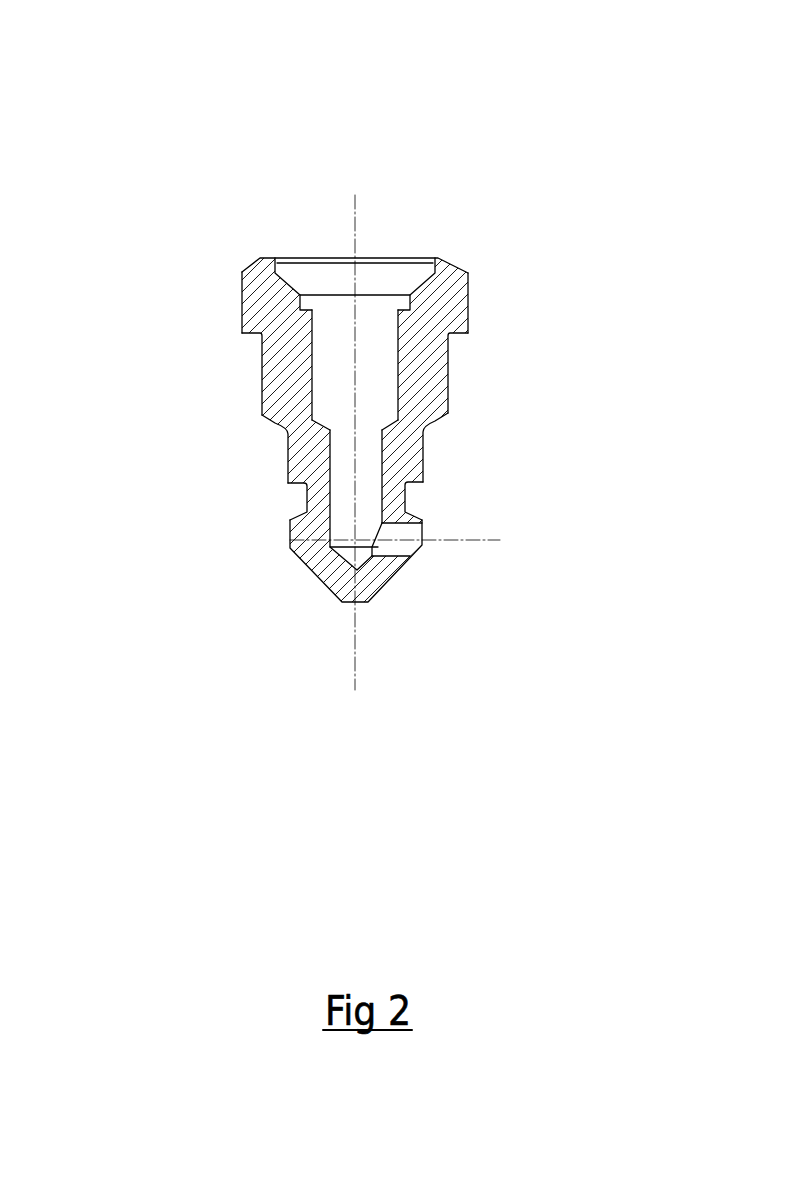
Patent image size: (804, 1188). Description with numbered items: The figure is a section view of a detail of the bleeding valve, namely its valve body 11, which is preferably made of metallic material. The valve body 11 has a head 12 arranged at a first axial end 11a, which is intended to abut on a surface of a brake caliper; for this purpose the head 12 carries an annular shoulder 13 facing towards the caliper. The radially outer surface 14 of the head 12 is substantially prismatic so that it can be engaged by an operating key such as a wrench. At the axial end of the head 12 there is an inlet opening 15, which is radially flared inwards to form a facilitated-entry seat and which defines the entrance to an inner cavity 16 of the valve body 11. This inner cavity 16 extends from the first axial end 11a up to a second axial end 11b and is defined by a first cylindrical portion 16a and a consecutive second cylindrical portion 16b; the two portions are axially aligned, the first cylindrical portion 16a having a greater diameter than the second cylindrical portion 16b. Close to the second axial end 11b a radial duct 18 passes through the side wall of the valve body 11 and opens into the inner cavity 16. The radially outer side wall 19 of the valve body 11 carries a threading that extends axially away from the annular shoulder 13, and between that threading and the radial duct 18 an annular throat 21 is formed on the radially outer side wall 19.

The valve body 11 is at (205, 190).
The first axial end 11a is at (473, 317).
The second axial end 11b is at (317, 572).
The head 12 is at (262, 292).
The annular shoulder 13 is at (262, 337).
The radially outer surface 14 is at (243, 302).
The inlet opening 15 is at (298, 280).
The inner cavity 16 is at (335, 393).
The first cylindrical portion 16a is at (375, 347).
The second cylindrical portion 16b is at (345, 508).
The radial duct 18 is at (400, 548).
The radially outer side wall 19 is at (448, 410).
The annular throat 21 is at (415, 501).